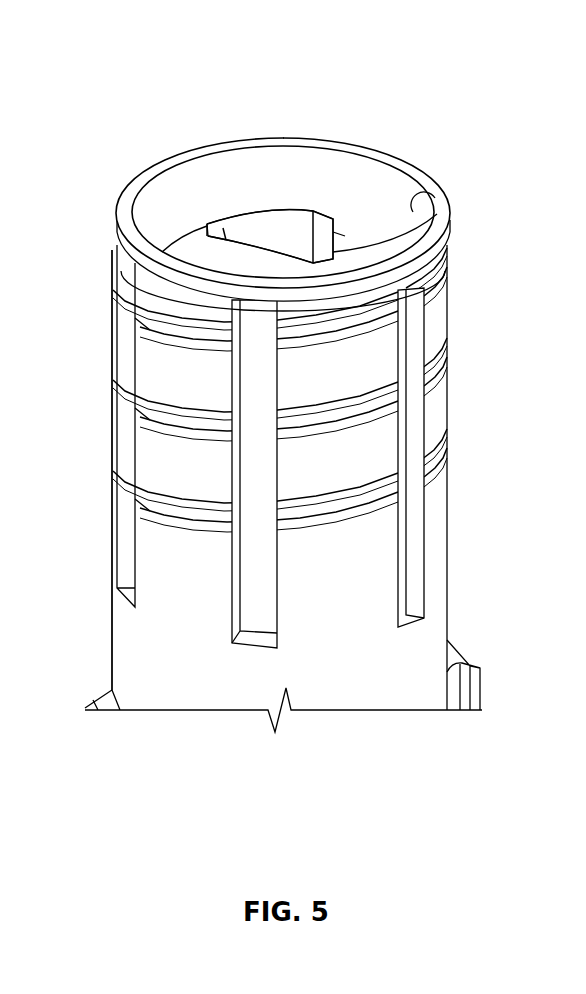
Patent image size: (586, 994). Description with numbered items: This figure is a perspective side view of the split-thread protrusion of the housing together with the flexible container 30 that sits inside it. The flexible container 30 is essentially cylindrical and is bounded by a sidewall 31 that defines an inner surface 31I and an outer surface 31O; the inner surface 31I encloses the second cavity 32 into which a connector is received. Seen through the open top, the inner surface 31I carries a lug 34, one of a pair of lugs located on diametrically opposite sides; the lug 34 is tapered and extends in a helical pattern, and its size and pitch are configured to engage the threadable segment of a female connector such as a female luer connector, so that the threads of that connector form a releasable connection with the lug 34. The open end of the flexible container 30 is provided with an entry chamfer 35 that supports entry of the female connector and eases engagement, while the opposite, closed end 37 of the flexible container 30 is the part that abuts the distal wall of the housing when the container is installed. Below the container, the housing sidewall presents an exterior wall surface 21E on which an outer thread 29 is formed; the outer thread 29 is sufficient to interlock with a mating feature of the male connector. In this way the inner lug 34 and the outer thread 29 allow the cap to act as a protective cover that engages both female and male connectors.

The exterior wall surface 21E is at (450, 590).
The outer thread 29 is at (453, 272).
The flexible container 30 is at (150, 165).
The sidewall 31 is at (334, 175).
The inner surface 31I is at (380, 157).
The outer surface 31O is at (433, 184).
The second cavity 32 is at (217, 160).
The lug 34 is at (243, 226).
The entry chamfer 35 is at (440, 189).
The closed end 37 is at (343, 232).